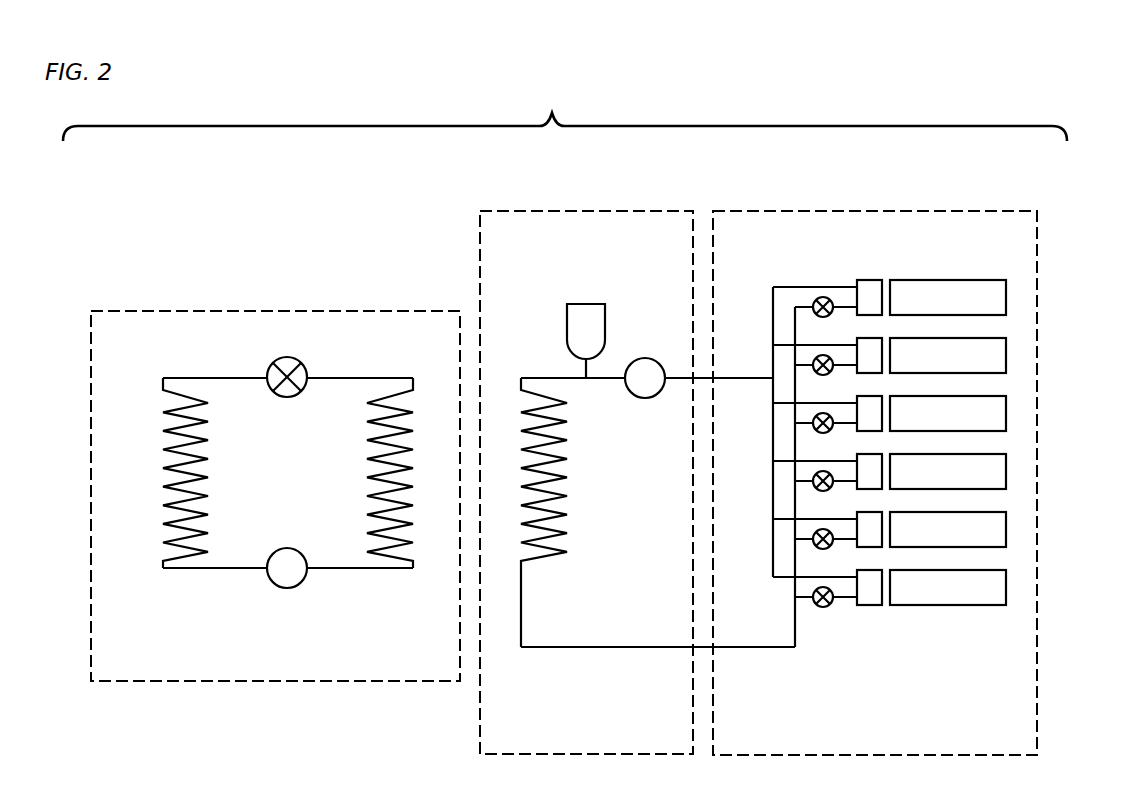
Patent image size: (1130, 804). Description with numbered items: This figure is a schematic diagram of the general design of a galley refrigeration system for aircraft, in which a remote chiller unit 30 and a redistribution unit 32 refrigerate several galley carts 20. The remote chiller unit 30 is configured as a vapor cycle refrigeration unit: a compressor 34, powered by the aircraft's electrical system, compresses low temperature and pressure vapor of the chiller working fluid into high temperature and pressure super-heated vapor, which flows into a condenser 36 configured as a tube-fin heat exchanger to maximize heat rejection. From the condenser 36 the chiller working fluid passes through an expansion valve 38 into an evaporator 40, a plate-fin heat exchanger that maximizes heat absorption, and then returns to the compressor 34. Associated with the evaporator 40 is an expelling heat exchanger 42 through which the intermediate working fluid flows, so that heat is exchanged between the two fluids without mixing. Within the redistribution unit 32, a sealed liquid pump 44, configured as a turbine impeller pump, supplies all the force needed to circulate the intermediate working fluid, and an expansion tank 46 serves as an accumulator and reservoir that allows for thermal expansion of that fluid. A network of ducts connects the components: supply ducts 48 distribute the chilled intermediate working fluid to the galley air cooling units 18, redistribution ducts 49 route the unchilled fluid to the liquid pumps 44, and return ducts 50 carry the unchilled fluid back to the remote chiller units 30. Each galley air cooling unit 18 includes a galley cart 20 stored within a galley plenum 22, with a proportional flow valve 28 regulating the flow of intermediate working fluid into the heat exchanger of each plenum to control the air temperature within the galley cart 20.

The galley air cooling unit 18 is at (1016, 412).
The galley cart 20 is at (940, 611).
The galley plenum 22 is at (871, 610).
The proportional flow valve 28 is at (825, 609).
The remote chiller unit 30 is at (285, 310).
The redistribution unit 32 is at (590, 210).
The compressor 34 is at (302, 582).
The condenser 36 is at (166, 482).
The expansion valve 38 is at (302, 364).
The evaporator 40 is at (372, 457).
The expelling heat exchanger 42 is at (567, 460).
The liquid pump 44 is at (650, 358).
The expansion tank 46 is at (588, 303).
The supply ducts 48 is at (578, 648).
The redistribution ducts 49 is at (772, 360).
The return ducts 50 is at (540, 378).